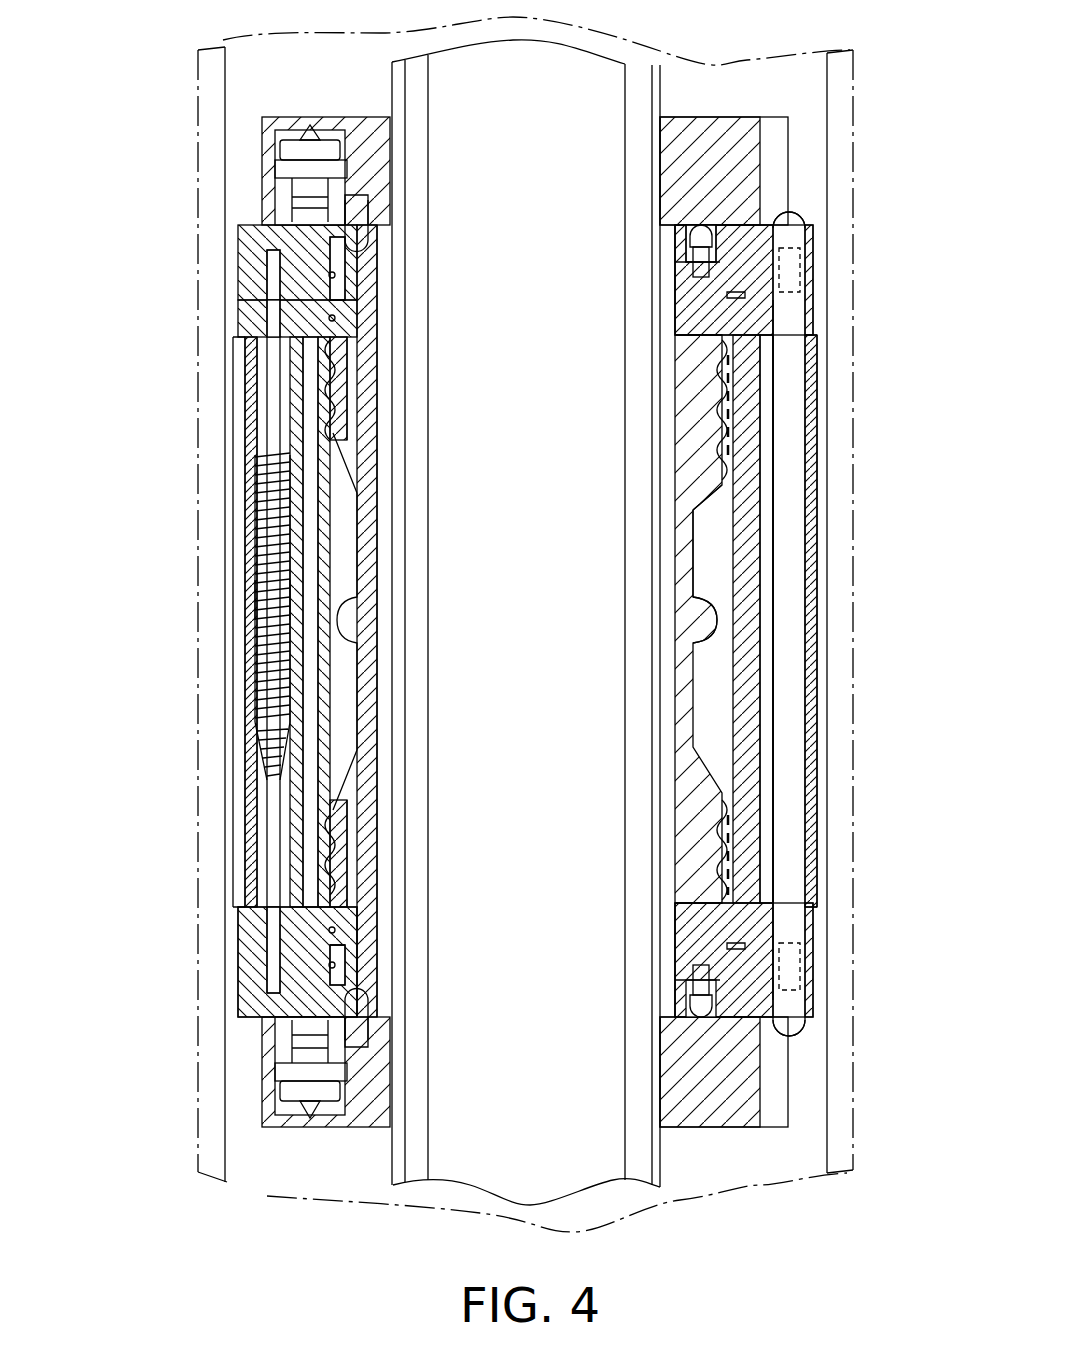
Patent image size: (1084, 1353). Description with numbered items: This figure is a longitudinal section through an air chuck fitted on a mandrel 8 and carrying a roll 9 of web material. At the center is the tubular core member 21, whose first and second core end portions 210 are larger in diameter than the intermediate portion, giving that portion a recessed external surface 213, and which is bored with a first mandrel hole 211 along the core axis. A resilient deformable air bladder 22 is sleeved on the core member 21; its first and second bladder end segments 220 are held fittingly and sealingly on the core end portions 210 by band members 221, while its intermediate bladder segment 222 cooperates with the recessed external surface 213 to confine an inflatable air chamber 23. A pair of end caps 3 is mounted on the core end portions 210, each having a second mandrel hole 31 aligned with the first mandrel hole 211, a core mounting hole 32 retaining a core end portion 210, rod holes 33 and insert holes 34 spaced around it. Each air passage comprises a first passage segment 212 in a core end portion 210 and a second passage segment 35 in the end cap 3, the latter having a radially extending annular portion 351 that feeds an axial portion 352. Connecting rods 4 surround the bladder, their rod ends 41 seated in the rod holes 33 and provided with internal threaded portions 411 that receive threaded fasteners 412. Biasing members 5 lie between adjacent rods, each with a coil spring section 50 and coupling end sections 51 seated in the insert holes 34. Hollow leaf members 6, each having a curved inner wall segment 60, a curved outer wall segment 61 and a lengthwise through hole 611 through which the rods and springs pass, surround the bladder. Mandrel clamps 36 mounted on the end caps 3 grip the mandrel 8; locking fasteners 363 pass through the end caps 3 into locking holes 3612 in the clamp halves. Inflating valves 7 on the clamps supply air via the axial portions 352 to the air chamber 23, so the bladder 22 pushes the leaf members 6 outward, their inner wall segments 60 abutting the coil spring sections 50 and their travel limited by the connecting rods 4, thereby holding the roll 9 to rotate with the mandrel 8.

The end cap 3 is at (731, 212).
The connecting rod 4 is at (800, 548).
The biasing member 5 is at (255, 527).
The leaf member 6 is at (240, 626).
The inflating valve 7 is at (308, 115).
The mandrel 8 is at (668, 82).
The roll of web material 9 is at (200, 97).
The tubular core member 21 is at (672, 345).
The resilient deformable air bladder 22 is at (716, 483).
The inflatable air chamber 23 is at (345, 565).
The second mandrel hole 31 is at (672, 240).
The core mounting hole 32 is at (703, 240).
The rod hole 33 is at (808, 298).
The insert hole 34 is at (240, 327).
The second passage segment 35 is at (308, 243).
The mandrel clamp 36 is at (752, 128).
The rod end 41 is at (787, 318).
The coil spring section 50 is at (263, 597).
The coupling end section 51 is at (270, 293).
The curved inner wall segment 60 is at (292, 408).
The curved outer wall segment 61 is at (252, 473).
The core end portion 210 is at (686, 380).
The first mandrel hole 211 is at (690, 515).
The first passage segment 212 is at (354, 351).
The recessed external surface 213 is at (712, 540).
The bladder end segment 220 is at (730, 393).
The band member 221 is at (312, 410).
The intermediate bladder segment 222 is at (700, 587).
The radially extending annular portion 351 is at (330, 292).
The axial portion 352 is at (310, 272).
The locking fastener 363 is at (360, 217).
The internal threaded portion 411 is at (812, 273).
The threaded fastener 412 is at (688, 283).
The through hole 611 is at (256, 372).
The locking hole 3612 is at (370, 200).